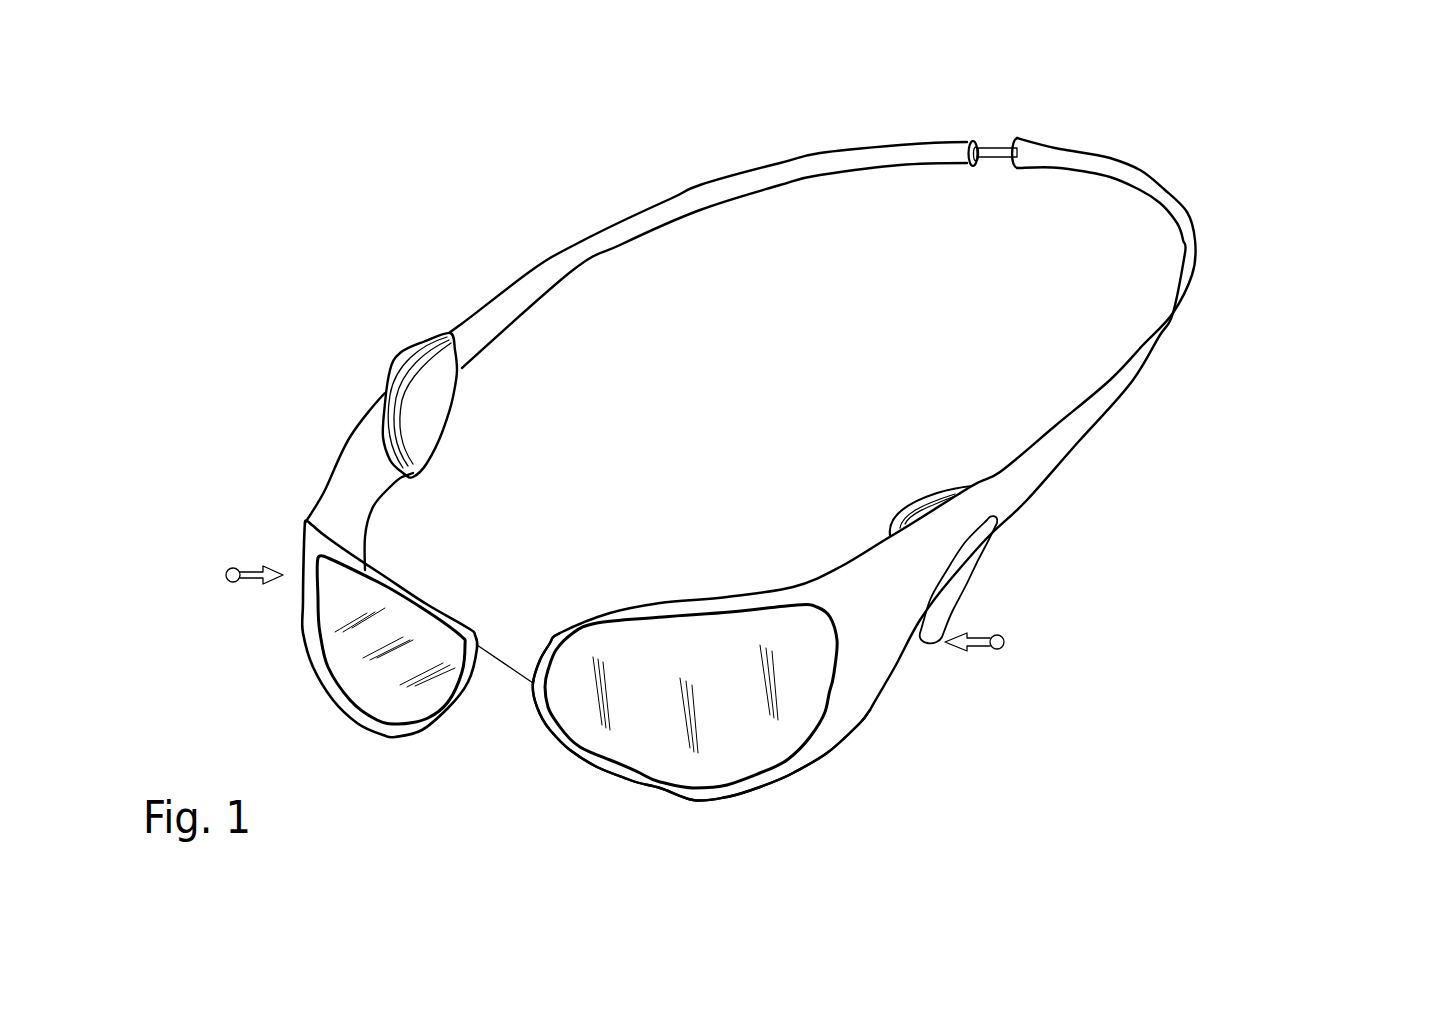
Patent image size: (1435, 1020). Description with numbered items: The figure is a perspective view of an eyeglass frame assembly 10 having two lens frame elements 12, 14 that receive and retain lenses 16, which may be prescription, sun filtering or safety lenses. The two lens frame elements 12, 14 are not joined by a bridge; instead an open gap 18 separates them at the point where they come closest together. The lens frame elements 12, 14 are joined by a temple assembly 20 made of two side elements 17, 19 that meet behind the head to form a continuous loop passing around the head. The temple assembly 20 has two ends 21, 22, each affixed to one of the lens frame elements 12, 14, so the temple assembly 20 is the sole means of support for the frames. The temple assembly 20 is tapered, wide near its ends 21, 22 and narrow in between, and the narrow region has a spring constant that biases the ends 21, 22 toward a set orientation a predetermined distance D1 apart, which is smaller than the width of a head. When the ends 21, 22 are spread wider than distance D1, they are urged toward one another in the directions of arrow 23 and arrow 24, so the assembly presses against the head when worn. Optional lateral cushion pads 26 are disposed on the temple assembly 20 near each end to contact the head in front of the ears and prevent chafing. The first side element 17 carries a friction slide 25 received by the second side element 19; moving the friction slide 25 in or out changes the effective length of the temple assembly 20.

The eyeglass frame assembly 10 is at (1277, 391).
The lens frame element 12 is at (395, 738).
The lens frame element 14 is at (655, 797).
The lenses 16 is at (557, 688).
The first side element 17 is at (1010, 488).
The open gap 18 is at (492, 660).
The second side element 19 is at (543, 266).
The temple assembly 20 is at (1108, 448).
The end of temple assembly 21 is at (350, 527).
The end of temple assembly 22 is at (883, 658).
The arrow 23 is at (247, 583).
The arrow 24 is at (980, 636).
The friction slide 25 is at (997, 146).
The lateral cushion pads 26 is at (440, 410).
The predetermined distance D1 is at (840, 565).